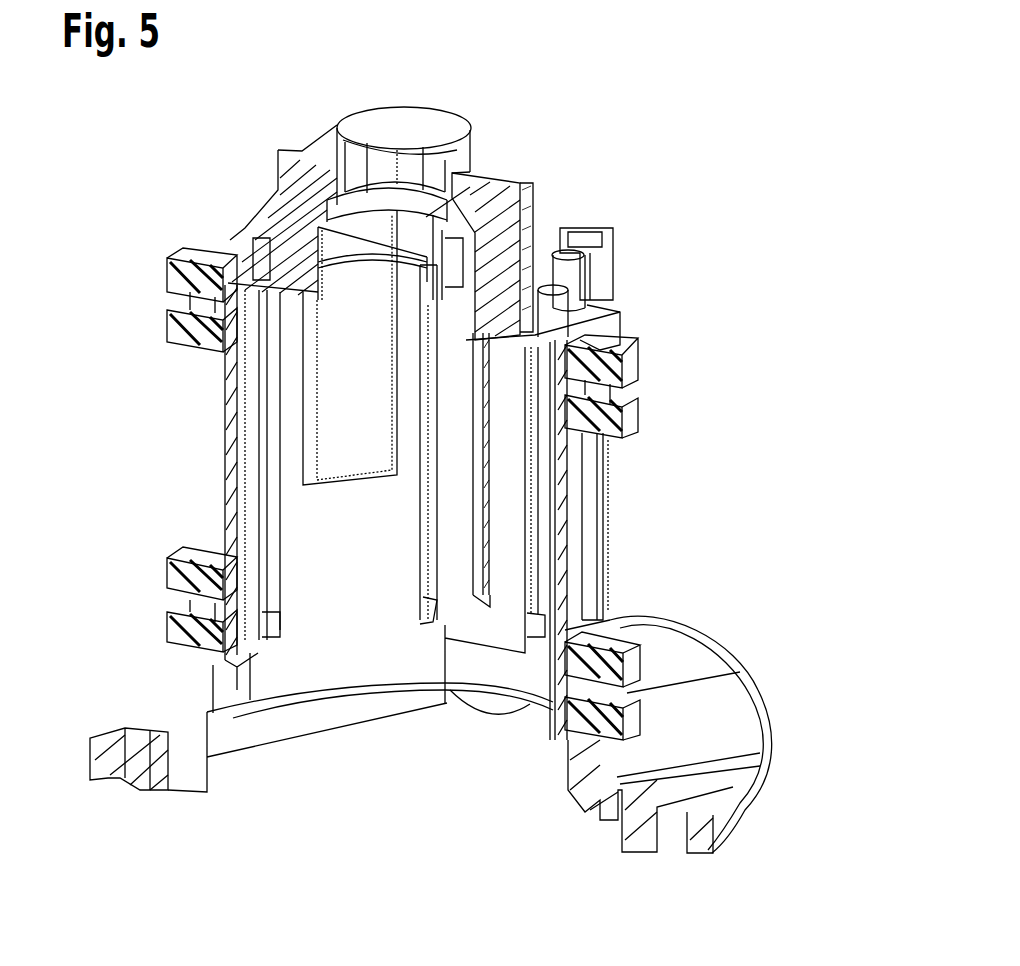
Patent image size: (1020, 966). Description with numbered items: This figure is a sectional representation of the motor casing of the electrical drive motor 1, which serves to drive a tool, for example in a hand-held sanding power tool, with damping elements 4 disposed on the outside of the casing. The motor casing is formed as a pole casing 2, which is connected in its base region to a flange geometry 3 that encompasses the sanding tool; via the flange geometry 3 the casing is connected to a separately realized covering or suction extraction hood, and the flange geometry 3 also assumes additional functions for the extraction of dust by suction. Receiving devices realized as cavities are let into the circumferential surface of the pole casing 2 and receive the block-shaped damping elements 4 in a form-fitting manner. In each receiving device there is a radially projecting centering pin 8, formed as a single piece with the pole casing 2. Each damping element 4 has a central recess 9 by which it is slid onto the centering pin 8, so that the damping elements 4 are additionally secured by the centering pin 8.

The electrical drive motor 1 is at (596, 151).
The pole casing 2 is at (226, 470).
The flange geometry 3 is at (190, 754).
The damping element 4 is at (165, 570).
The centering pin 8 is at (167, 616).
The central recess 9 is at (632, 398).